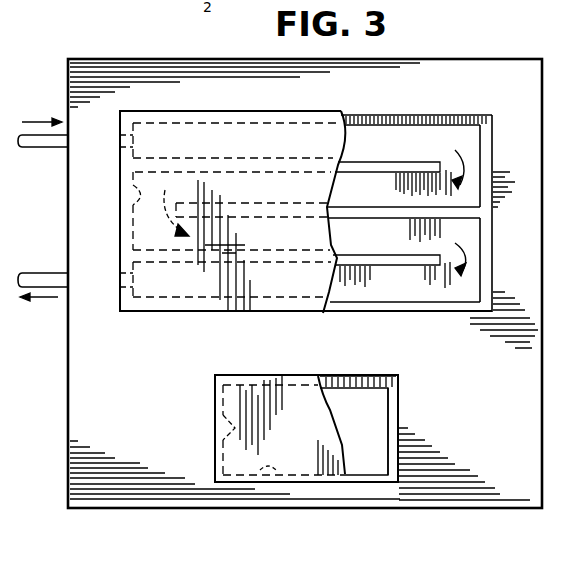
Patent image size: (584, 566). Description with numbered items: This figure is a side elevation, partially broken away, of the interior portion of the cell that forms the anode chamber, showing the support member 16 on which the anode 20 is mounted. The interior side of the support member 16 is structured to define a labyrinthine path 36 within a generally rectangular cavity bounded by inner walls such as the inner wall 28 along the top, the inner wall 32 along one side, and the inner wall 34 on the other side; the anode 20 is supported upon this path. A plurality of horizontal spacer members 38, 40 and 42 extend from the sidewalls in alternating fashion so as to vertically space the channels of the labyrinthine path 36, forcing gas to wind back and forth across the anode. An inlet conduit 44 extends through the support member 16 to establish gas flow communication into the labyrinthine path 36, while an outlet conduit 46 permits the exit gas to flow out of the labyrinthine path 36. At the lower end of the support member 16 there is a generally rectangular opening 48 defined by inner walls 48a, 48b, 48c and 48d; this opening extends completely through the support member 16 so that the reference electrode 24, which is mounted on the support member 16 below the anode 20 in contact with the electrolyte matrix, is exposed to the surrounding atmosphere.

The support member 16 is at (97, 66).
The anode 20 is at (258, 137).
The reference electrode 24 is at (308, 439).
The inner wall 28 is at (378, 124).
The inner wall 32 is at (478, 178).
The inner wall 34 is at (133, 214).
The labyrinthine path 36 is at (438, 134).
The horizontal spacer member 38 is at (360, 170).
The horizontal spacer member 40 is at (350, 214).
The horizontal spacer member 42 is at (383, 263).
The inlet conduit 44 is at (45, 143).
The outlet conduit 46 is at (45, 276).
The rectangular opening 48 is at (368, 462).
The inner wall 48a is at (350, 392).
The inner wall 48b is at (388, 410).
The inner wall 48c is at (272, 480).
The inner wall 48d is at (233, 418).